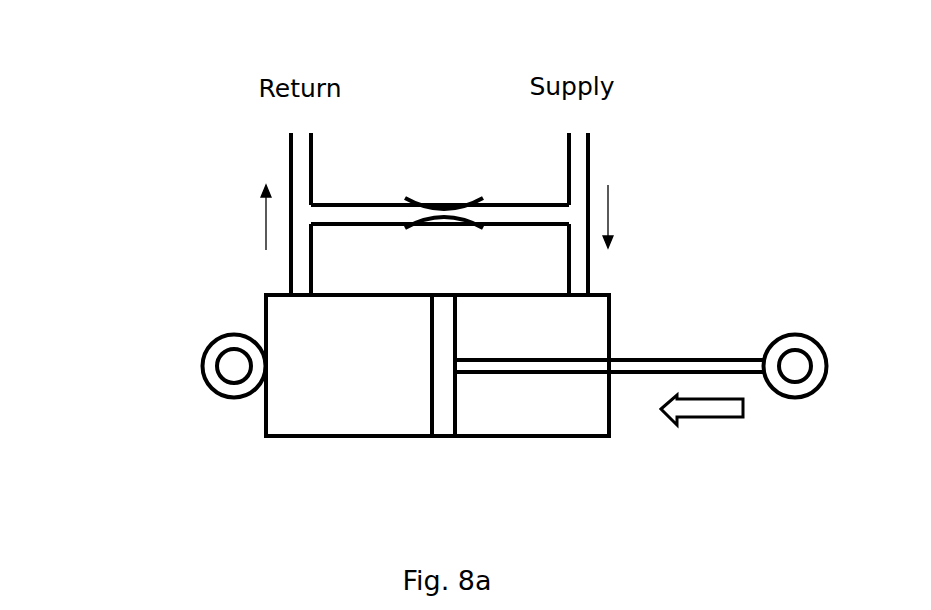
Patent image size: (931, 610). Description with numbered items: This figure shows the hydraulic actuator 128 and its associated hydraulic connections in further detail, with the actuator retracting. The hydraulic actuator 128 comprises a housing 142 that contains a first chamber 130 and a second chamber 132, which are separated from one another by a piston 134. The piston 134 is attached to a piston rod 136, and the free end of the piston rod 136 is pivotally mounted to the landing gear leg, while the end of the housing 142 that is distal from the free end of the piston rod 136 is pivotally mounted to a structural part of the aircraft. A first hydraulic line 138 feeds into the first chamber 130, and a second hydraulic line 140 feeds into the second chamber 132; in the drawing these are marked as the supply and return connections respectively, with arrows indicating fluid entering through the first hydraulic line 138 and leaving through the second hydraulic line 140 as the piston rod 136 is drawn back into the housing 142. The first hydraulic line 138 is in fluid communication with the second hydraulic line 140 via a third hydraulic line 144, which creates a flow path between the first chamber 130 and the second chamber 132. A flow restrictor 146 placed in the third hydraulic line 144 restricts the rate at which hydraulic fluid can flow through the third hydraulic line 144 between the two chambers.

The hydraulic actuator 128 is at (235, 439).
The first chamber 130 is at (557, 336).
The second chamber 132 is at (374, 378).
The piston 134 is at (443, 427).
The piston rod 136 is at (672, 357).
The first hydraulic line 138 is at (590, 158).
The second hydraulic line 140 is at (289, 156).
The housing 142 is at (312, 437).
The third hydraulic line 144 is at (380, 203).
The flow restrictor 146 is at (440, 208).